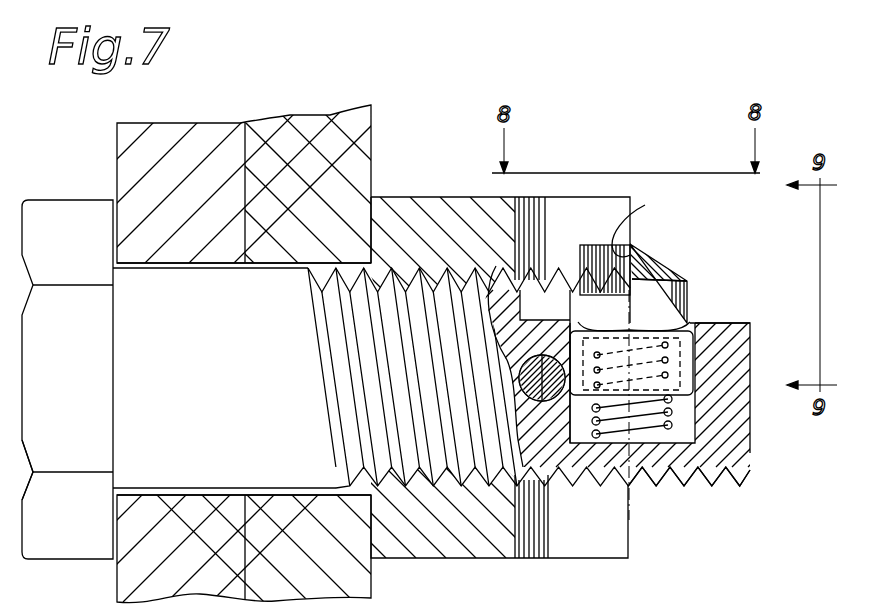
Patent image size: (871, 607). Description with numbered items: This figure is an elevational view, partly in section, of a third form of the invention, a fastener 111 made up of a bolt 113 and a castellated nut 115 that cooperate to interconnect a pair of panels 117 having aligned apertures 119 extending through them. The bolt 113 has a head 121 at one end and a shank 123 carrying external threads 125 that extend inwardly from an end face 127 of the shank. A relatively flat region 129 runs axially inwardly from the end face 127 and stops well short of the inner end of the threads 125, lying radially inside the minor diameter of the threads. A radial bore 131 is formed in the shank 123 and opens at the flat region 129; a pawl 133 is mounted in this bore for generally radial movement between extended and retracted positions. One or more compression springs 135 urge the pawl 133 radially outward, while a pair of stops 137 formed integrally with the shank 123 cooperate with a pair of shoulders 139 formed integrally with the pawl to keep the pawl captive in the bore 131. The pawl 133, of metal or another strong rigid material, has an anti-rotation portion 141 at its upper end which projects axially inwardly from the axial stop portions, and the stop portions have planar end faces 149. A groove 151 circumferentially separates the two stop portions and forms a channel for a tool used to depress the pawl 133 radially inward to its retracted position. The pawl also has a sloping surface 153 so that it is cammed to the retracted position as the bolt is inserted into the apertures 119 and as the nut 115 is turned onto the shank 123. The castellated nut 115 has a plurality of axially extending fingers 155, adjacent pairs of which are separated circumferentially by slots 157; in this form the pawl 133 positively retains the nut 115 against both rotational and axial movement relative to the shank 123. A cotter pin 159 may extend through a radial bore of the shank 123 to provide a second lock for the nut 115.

The fastener 111 is at (33, 184).
The bolt 113 is at (77, 194).
The castellated nut 115 is at (464, 194).
The panels 117 is at (205, 160).
The apertures 119 is at (281, 264).
The head 121 is at (65, 537).
The shank 123 is at (147, 428).
The external threads 125 is at (733, 487).
The end face 127 is at (752, 452).
The flat region 129 is at (718, 325).
The radial bore 131 is at (688, 426).
The pawl 133 is at (688, 283).
The compression springs 135 is at (655, 432).
The stops 137 is at (733, 304).
The shoulders 139 is at (673, 283).
The anti-rotation portion 141 is at (597, 245).
The planar end faces 149 is at (646, 226).
The groove 151 is at (665, 248).
The sloping surface 153 is at (645, 258).
The axially extending fingers 155 is at (563, 197).
The slots 157 is at (667, 603).
The cotter pin 159 is at (519, 378).